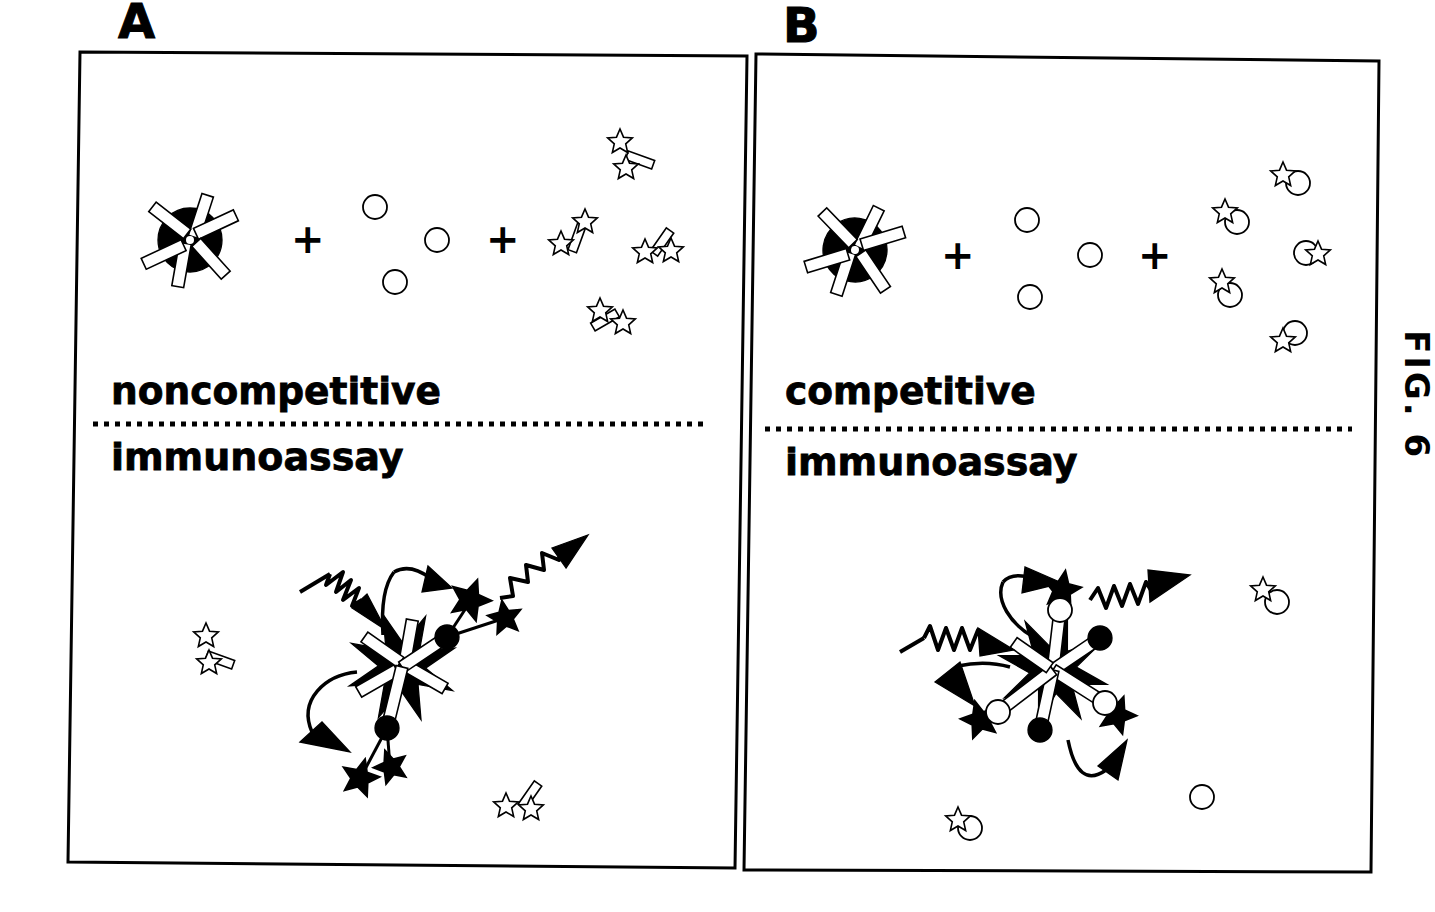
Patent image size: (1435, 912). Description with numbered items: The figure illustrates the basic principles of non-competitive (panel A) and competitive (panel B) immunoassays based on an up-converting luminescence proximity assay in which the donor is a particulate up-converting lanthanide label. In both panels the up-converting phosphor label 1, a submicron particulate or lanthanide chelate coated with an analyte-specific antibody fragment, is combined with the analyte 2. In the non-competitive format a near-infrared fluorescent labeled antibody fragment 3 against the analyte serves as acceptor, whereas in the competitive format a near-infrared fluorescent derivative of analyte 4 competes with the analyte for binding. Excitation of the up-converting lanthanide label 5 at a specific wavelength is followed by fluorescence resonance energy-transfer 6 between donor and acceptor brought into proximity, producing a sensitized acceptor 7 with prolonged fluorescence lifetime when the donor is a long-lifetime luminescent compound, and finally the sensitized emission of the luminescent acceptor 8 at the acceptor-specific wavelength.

The up-converting phosphor label 1 is at (183, 209).
The analyte 2 is at (438, 227).
The near-infrared fluorescent labeled antibody fragment 3 is at (572, 225).
The near-infrared fluorescent derivative of analyte 4 is at (1232, 203).
The excitation of the up-converting lanthanide label 5 is at (641, 624).
The fluorescence resonance energy-transfer 6 is at (394, 572).
The sensitized acceptor 7 is at (474, 596).
The sensitized emission of the luminescent acceptor 8 is at (560, 568).